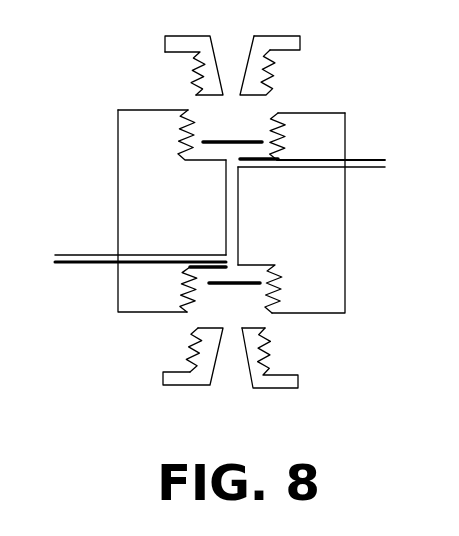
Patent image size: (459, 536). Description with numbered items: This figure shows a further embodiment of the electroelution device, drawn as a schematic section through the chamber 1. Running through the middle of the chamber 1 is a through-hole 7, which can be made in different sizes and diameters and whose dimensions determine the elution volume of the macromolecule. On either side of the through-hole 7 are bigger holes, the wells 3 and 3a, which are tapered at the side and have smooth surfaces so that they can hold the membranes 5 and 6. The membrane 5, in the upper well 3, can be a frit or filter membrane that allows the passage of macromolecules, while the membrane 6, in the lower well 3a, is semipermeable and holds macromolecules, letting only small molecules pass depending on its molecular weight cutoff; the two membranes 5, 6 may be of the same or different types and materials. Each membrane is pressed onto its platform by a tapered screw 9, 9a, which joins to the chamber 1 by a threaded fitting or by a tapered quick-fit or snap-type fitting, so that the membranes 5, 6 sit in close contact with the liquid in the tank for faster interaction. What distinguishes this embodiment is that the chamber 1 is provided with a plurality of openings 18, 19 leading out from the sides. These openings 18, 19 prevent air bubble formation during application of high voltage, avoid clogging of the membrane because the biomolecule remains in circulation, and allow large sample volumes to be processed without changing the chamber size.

The chamber 1 is at (347, 255).
The well 3 is at (257, 136).
The well 3a is at (253, 310).
The membrane 5 is at (215, 138).
The membrane 6 is at (219, 287).
The through-hole 7 is at (237, 220).
The tapered screw 9 is at (300, 47).
The tapered screw 9a is at (293, 382).
The opening 18 is at (364, 161).
The opening 19 is at (140, 252).